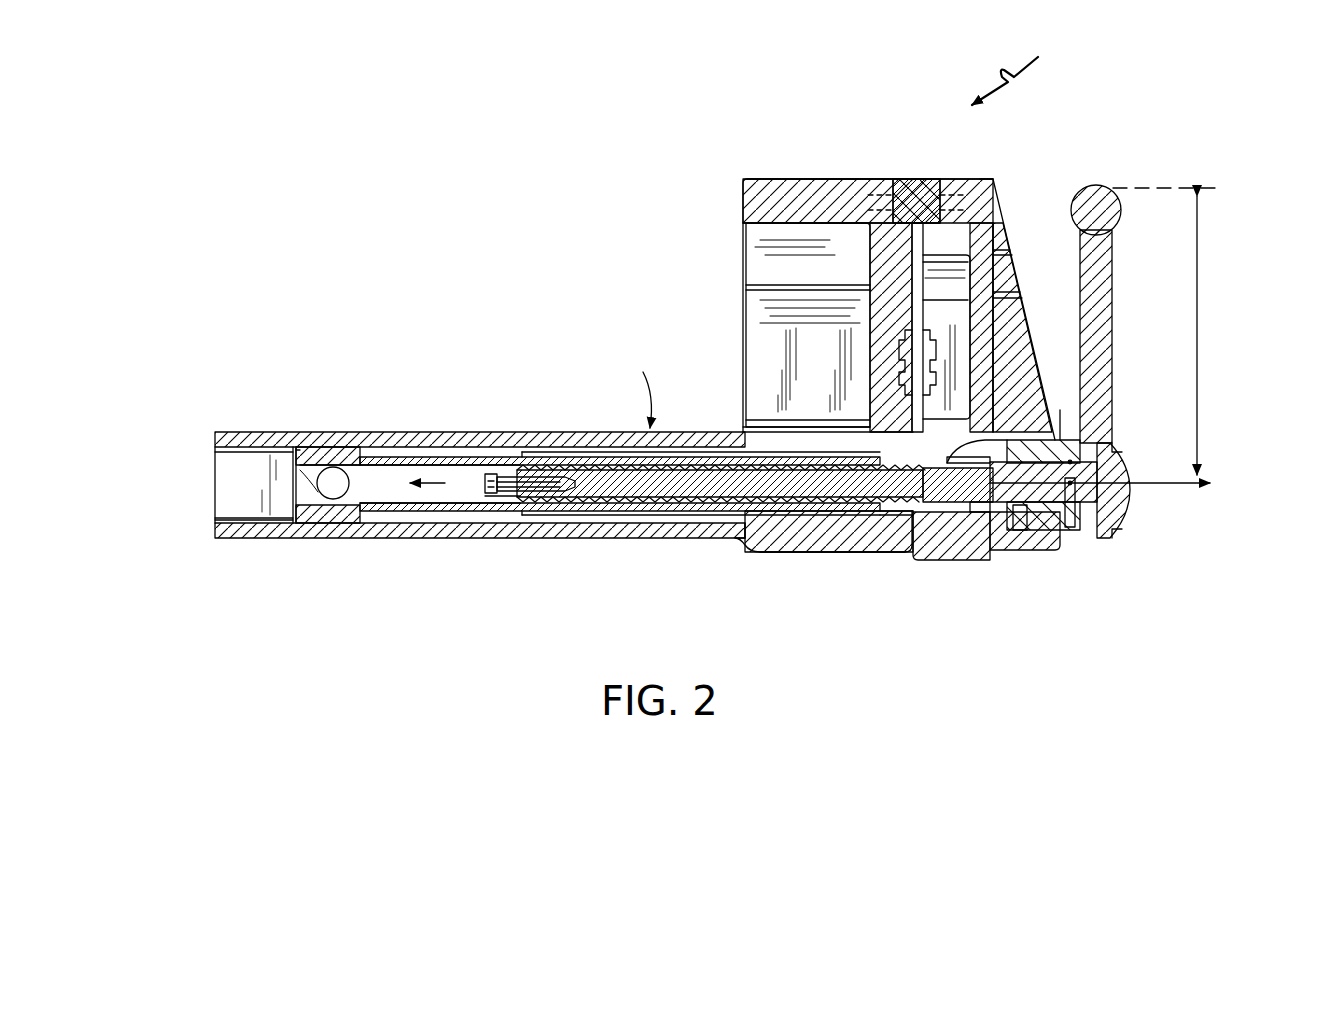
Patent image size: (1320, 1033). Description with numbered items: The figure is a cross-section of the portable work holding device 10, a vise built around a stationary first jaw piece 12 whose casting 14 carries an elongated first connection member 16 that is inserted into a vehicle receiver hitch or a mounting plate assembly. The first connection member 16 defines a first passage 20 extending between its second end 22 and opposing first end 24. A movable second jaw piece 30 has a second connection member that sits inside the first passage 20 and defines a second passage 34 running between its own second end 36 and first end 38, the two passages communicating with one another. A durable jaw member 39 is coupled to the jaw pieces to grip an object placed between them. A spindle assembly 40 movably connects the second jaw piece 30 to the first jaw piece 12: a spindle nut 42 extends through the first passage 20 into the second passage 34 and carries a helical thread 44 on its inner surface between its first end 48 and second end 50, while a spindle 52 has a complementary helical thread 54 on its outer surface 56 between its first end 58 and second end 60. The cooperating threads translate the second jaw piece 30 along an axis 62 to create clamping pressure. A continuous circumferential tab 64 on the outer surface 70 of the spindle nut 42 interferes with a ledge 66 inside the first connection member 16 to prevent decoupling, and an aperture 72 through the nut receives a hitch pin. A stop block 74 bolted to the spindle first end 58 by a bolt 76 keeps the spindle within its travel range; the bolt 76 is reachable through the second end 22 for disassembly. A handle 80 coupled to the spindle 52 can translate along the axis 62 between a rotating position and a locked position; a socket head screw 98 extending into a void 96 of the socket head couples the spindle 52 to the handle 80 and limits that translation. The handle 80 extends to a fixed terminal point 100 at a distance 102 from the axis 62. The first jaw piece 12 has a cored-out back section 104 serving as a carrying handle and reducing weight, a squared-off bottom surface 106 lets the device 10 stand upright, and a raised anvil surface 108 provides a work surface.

The work holding device 10 is at (1010, 65).
The first jaw piece 12 is at (832, 192).
The casting 14 is at (748, 215).
The first connection member 16 is at (232, 432).
The first passage 20 is at (228, 481).
The second end 22 is at (215, 523).
The first end 24 is at (878, 528).
The second jaw piece 30 is at (985, 200).
The second passage 34 is at (945, 512).
The second end 36 is at (510, 512).
The first end 38 is at (978, 551).
The jaw member 39 is at (928, 179).
The spindle assembly 40 is at (637, 381).
The spindle nut 42 is at (325, 508).
The helical thread 44 is at (585, 503).
The first end 48 is at (292, 512).
The second end 50 is at (856, 553).
The spindle 52 is at (668, 503).
The helical thread 54 is at (700, 468).
The outer surface 56 is at (960, 455).
The first end 58 is at (500, 474).
The second end 60 is at (1103, 539).
The axis 62 is at (1162, 488).
The tab 64 is at (298, 447).
The ledge 66 is at (310, 447).
The outer surface 70 is at (348, 440).
The aperture 72 is at (328, 492).
The stop block 74 is at (492, 505).
The bolt 76 is at (535, 477).
The handle 80 is at (1105, 326).
The void 96 is at (1045, 531).
The socket head screw 98 is at (1072, 530).
The fixed terminal point 100 is at (1100, 186).
The distance 102 is at (1200, 336).
The cored-out back section 104 is at (748, 298).
The bottom surface 106 is at (760, 553).
The anvil surface 108 is at (770, 179).